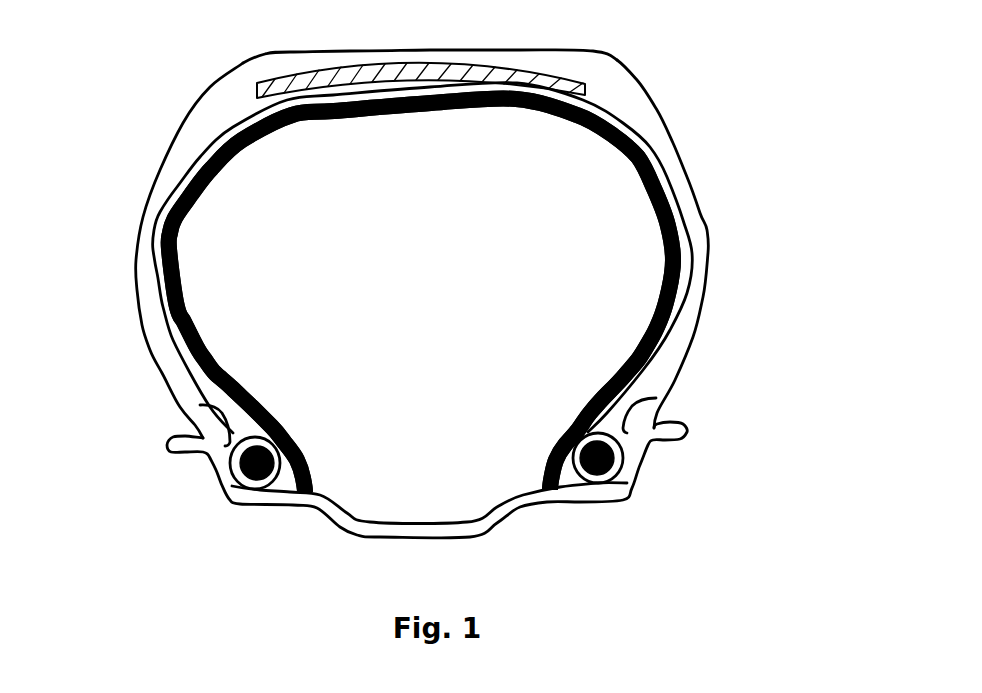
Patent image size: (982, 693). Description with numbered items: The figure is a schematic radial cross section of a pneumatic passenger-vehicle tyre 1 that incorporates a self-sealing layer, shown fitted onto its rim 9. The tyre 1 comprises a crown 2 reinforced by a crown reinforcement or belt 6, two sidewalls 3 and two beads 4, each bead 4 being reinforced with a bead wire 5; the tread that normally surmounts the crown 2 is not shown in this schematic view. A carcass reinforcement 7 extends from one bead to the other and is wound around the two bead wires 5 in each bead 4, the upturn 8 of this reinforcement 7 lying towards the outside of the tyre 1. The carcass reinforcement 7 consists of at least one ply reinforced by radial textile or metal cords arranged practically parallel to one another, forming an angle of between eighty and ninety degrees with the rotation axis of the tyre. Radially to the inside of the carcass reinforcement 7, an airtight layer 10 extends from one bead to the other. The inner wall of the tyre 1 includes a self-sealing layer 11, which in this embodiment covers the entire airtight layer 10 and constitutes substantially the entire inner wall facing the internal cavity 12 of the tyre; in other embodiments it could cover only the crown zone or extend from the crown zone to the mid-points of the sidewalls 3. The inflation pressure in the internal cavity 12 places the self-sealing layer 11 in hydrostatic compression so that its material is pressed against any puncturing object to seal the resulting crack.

The tyre 1 is at (713, 202).
The crown 2 is at (547, 63).
The sidewall 3 is at (145, 261).
The bead 4 is at (282, 485).
The bead wire 5 is at (273, 462).
The belt 6 is at (478, 67).
The carcass reinforcement 7 is at (177, 183).
The upturn 8 is at (187, 410).
The rim 9 is at (218, 470).
The airtight layer 10 is at (656, 184).
The self-sealing layer 11 is at (667, 232).
The internal cavity 12 is at (270, 293).